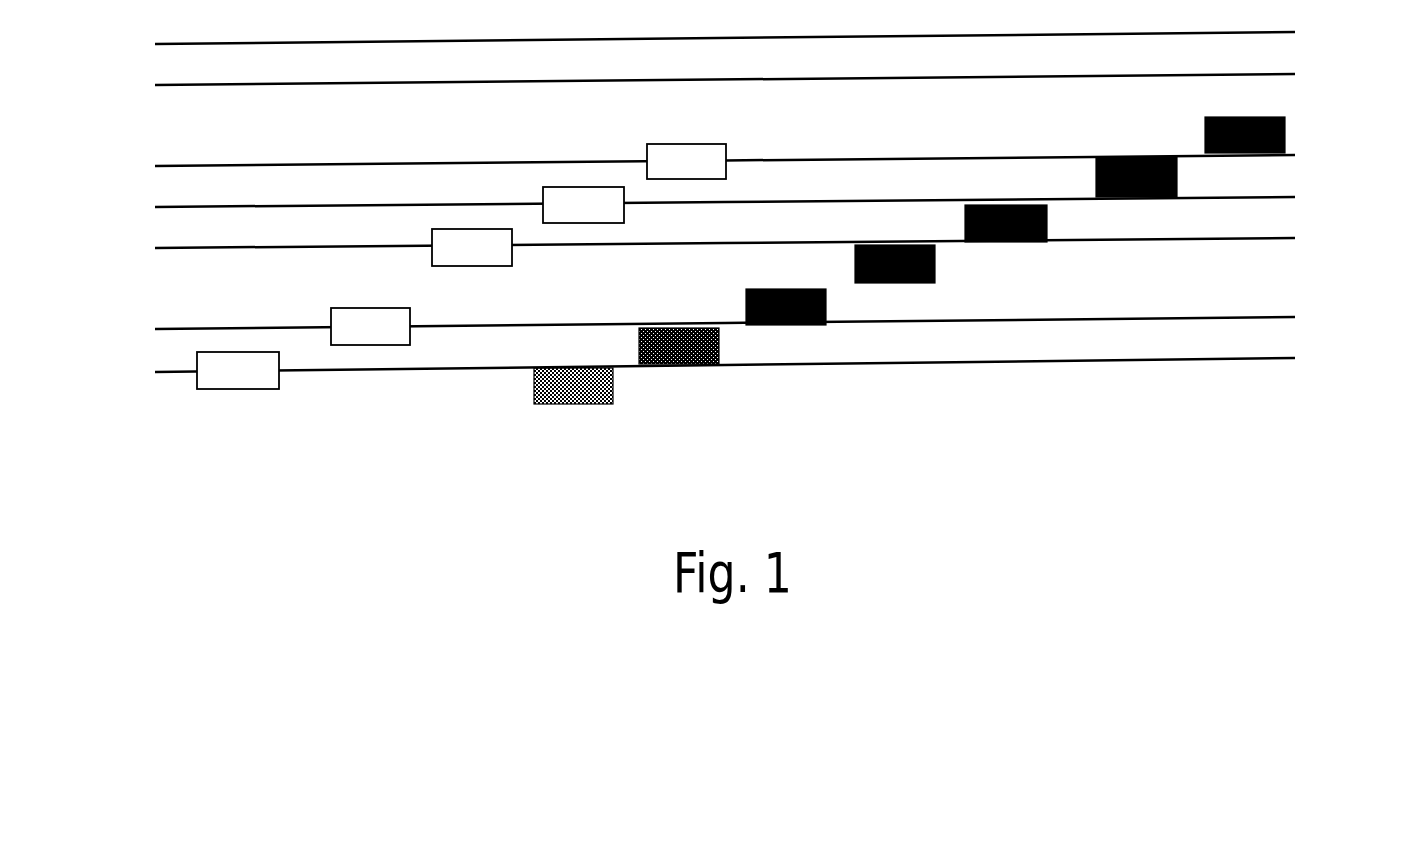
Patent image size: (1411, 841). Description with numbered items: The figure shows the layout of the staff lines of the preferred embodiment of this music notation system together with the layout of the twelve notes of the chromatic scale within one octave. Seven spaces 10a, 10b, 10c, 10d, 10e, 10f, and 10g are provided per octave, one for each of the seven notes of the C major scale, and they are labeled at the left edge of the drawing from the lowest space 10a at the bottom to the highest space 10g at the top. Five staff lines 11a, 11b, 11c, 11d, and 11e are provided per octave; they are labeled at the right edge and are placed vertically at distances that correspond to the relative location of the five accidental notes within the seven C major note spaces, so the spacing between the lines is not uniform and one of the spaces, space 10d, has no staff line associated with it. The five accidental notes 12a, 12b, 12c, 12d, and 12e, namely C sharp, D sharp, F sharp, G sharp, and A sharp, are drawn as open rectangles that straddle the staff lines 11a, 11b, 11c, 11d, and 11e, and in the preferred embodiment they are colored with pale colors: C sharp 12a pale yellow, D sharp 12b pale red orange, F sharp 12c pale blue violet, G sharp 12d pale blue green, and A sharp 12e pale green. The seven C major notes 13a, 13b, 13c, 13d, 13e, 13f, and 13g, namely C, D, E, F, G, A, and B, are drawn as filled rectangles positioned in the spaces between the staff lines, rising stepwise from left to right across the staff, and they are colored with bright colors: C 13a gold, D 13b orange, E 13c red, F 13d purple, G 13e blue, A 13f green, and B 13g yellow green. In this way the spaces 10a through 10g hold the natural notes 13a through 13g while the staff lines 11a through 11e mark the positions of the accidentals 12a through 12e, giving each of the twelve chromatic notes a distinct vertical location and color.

The space 10a is at (143, 393).
The space 10b is at (143, 352).
The space 10c is at (143, 311).
The space 10d is at (143, 270).
The space 10e is at (143, 229).
The space 10f is at (143, 189).
The space 10g is at (143, 148).
The staff line 11a is at (1315, 356).
The staff line 11b is at (1315, 316).
The staff line 11c is at (1315, 235).
The staff line 11d is at (1315, 193).
The staff line 11e is at (1315, 154).
The accidental note 12a is at (230, 340).
The accidental note 12b is at (363, 296).
The accidental note 12c is at (463, 217).
The accidental note 12d is at (575, 175).
The accidental note 12e is at (686, 132).
The C major note 13a is at (573, 416).
The C major note 13b is at (681, 376).
The C major note 13c is at (786, 337).
The C major note 13d is at (895, 295).
The C major note 13e is at (1007, 254).
The C major note 13f is at (1139, 215).
The C major note 13g is at (1250, 165).